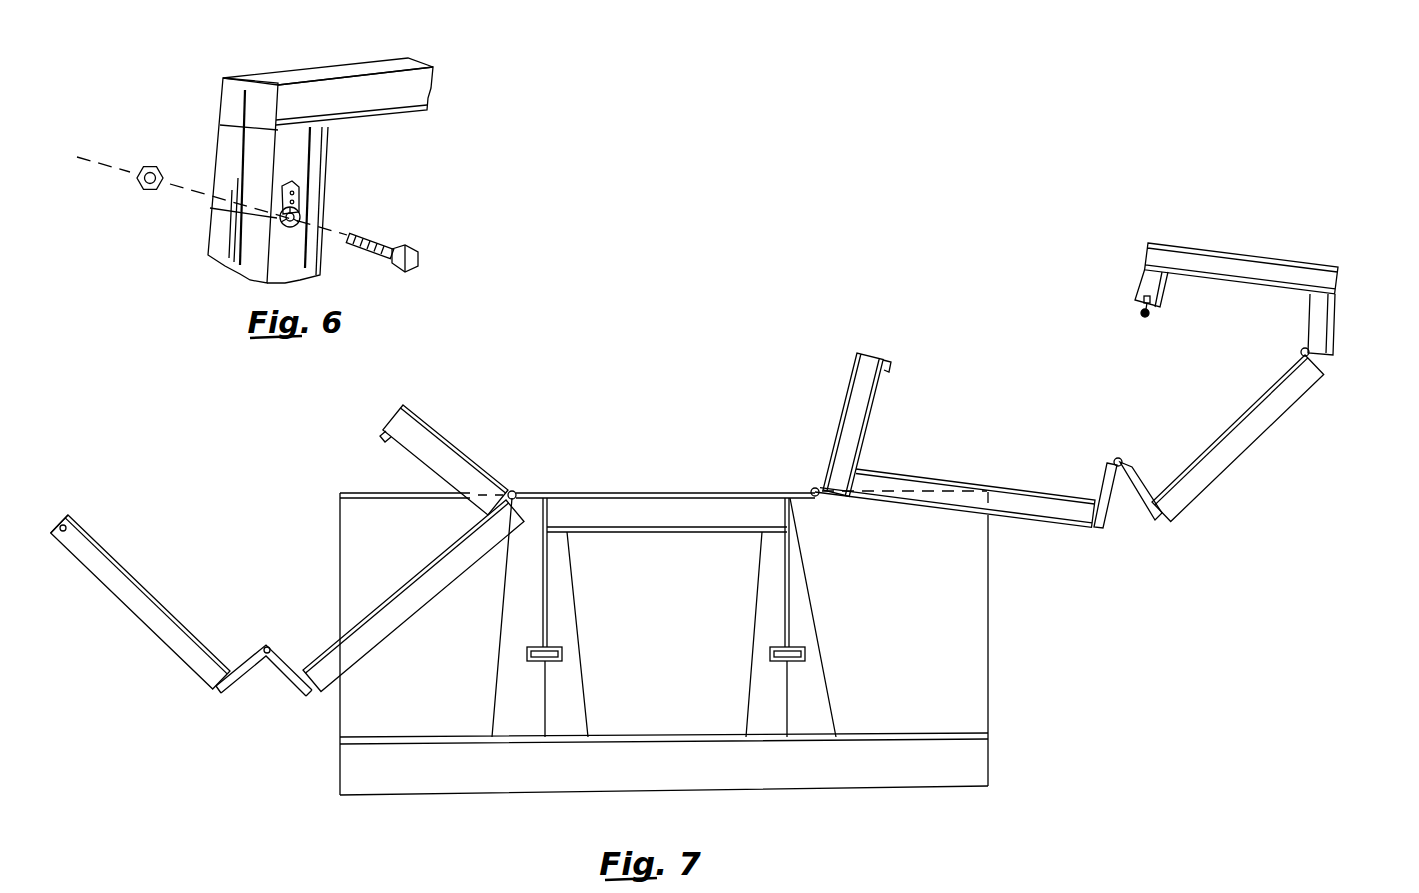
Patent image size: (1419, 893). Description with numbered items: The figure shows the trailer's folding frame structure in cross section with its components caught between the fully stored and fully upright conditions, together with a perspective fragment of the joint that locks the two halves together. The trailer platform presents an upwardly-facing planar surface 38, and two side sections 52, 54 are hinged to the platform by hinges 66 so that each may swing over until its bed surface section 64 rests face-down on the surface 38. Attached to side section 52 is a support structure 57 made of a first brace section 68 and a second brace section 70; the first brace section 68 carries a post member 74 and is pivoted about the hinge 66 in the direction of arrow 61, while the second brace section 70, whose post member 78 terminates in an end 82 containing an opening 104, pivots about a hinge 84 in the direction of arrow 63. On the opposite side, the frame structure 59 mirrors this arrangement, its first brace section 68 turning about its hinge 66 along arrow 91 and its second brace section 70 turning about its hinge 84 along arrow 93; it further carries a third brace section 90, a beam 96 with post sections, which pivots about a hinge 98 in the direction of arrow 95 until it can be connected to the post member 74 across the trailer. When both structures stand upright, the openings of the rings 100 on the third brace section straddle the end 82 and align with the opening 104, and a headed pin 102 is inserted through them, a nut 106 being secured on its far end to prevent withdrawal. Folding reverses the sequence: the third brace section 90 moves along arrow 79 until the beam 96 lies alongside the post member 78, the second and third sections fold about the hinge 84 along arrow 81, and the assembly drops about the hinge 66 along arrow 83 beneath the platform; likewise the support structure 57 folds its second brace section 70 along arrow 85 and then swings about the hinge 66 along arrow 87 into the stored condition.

In FIG. 7, the upwardly-facing planar surface 38 is at (625, 492).
In FIG. 7, the side section 52 is at (430, 425).
In FIG. 7, the side section 54 is at (850, 388).
In FIG. 7, the support structure 57 is at (158, 643).
In FIG. 7, the frame structure 59 is at (1217, 477).
In FIG. 7, the arrow 61 is at (495, 573).
In FIG. 7, the arrow 63 is at (297, 615).
In FIG. 7, the bed surface section 64 is at (477, 470).
In FIG. 7, the hinge 66 is at (513, 492).
In FIG. 7, the first brace section 68 is at (397, 613).
In FIG. 7, the second brace section 70 is at (130, 615).
In FIG. 7, the post member 74 is at (368, 643).
In FIG. 7, the post member 78 is at (130, 572).
In FIG. 7, the arrow 79 is at (1263, 335).
In FIG. 7, the arrow 81 is at (1148, 430).
In FIG. 6, the end of post member 82 is at (218, 223).
In FIG. 7, the end of post member 82 is at (65, 553).
In FIG. 7, the arrow 83 is at (832, 537).
In FIG. 7, the hinge 84 is at (267, 654).
In FIG. 7, the arrow 85 is at (302, 717).
In FIG. 7, the arrow 87 is at (547, 446).
In FIG. 7, the third brace section 90 is at (1238, 250).
In FIG. 7, the arrow 91 is at (767, 478).
In FIG. 7, the arrow 93 is at (1100, 548).
In FIG. 7, the arrow 95 is at (1348, 398).
In FIG. 7, the beam 96 is at (1198, 278).
In FIG. 7, the hinge 98 is at (1302, 352).
In FIG. 6, the rings 100 is at (300, 212).
In FIG. 6, the headed pin 102 is at (385, 238).
In FIG. 7, the opening 104 is at (72, 522).
In FIG. 6, the nut 106 is at (148, 168).